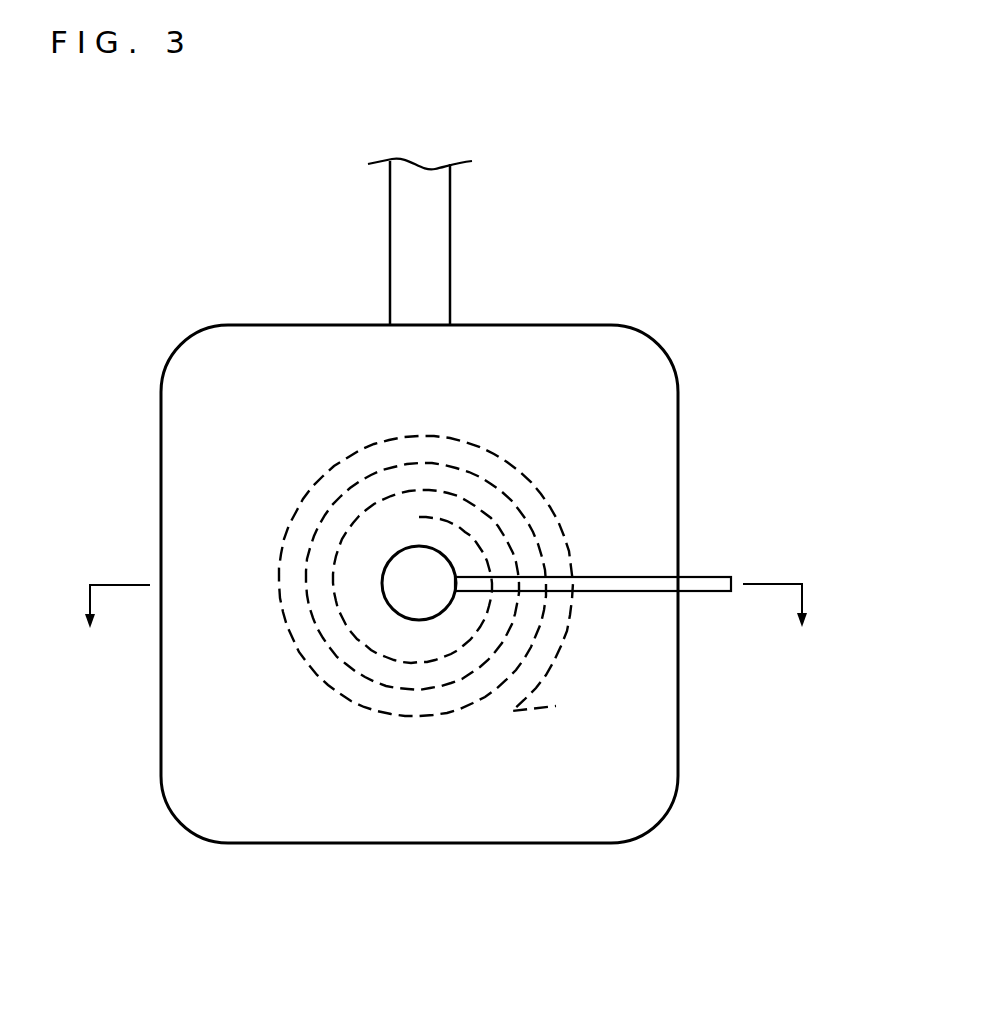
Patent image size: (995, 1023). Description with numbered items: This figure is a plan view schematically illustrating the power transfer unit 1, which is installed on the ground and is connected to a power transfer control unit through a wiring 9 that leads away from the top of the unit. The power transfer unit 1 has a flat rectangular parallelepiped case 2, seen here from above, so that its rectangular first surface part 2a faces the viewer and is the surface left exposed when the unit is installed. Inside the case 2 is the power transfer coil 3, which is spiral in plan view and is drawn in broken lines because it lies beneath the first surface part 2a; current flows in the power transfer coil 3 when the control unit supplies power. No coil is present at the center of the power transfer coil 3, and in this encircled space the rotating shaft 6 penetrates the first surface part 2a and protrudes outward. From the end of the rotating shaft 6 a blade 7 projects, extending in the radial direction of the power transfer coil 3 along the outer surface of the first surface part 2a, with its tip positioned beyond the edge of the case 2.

The power transfer unit 1 is at (835, 167).
The case 2 is at (585, 324).
The first surface part 2a is at (627, 362).
The power transfer coil 3 is at (585, 503).
The rotating shaft 6 is at (405, 573).
The blade 7 is at (703, 582).
The wiring 9 is at (433, 245).